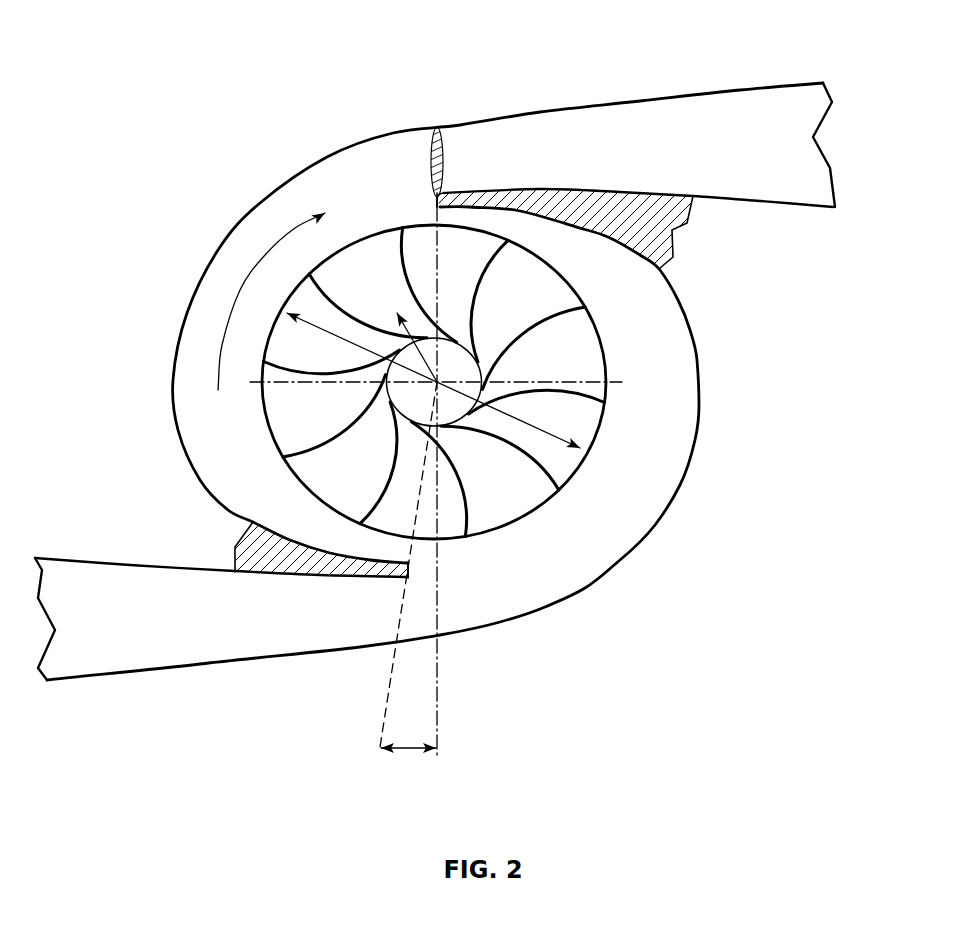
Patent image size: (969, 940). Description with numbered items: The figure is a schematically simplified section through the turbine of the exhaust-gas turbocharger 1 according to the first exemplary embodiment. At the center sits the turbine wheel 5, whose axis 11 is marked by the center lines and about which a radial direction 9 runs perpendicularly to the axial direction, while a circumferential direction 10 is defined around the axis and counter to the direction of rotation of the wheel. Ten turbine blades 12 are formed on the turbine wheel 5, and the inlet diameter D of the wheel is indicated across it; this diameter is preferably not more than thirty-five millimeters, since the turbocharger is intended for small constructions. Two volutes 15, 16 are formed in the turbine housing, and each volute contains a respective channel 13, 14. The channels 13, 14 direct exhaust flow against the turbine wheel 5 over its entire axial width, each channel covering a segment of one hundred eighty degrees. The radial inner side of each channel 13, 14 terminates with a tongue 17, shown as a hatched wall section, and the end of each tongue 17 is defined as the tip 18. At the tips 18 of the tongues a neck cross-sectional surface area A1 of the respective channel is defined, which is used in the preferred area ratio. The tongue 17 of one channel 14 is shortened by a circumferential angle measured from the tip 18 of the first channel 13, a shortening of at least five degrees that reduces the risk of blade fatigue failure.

The exhaust-gas turbocharger 1 is at (236, 48).
The turbine wheel 5 is at (592, 294).
The radial direction 9 is at (446, 338).
The circumferential direction 10 is at (250, 280).
The axis 11 is at (440, 387).
The turbine blades 12 is at (552, 313).
The first channel 13 is at (610, 147).
The second channel 14 is at (233, 628).
The first volute 15 is at (553, 110).
The second volute 16 is at (153, 672).
The tongue 17 is at (512, 193).
The tip 18 is at (428, 200).
The neck cross-sectional surface area A1 is at (429, 165).
The inlet diameter D is at (523, 421).